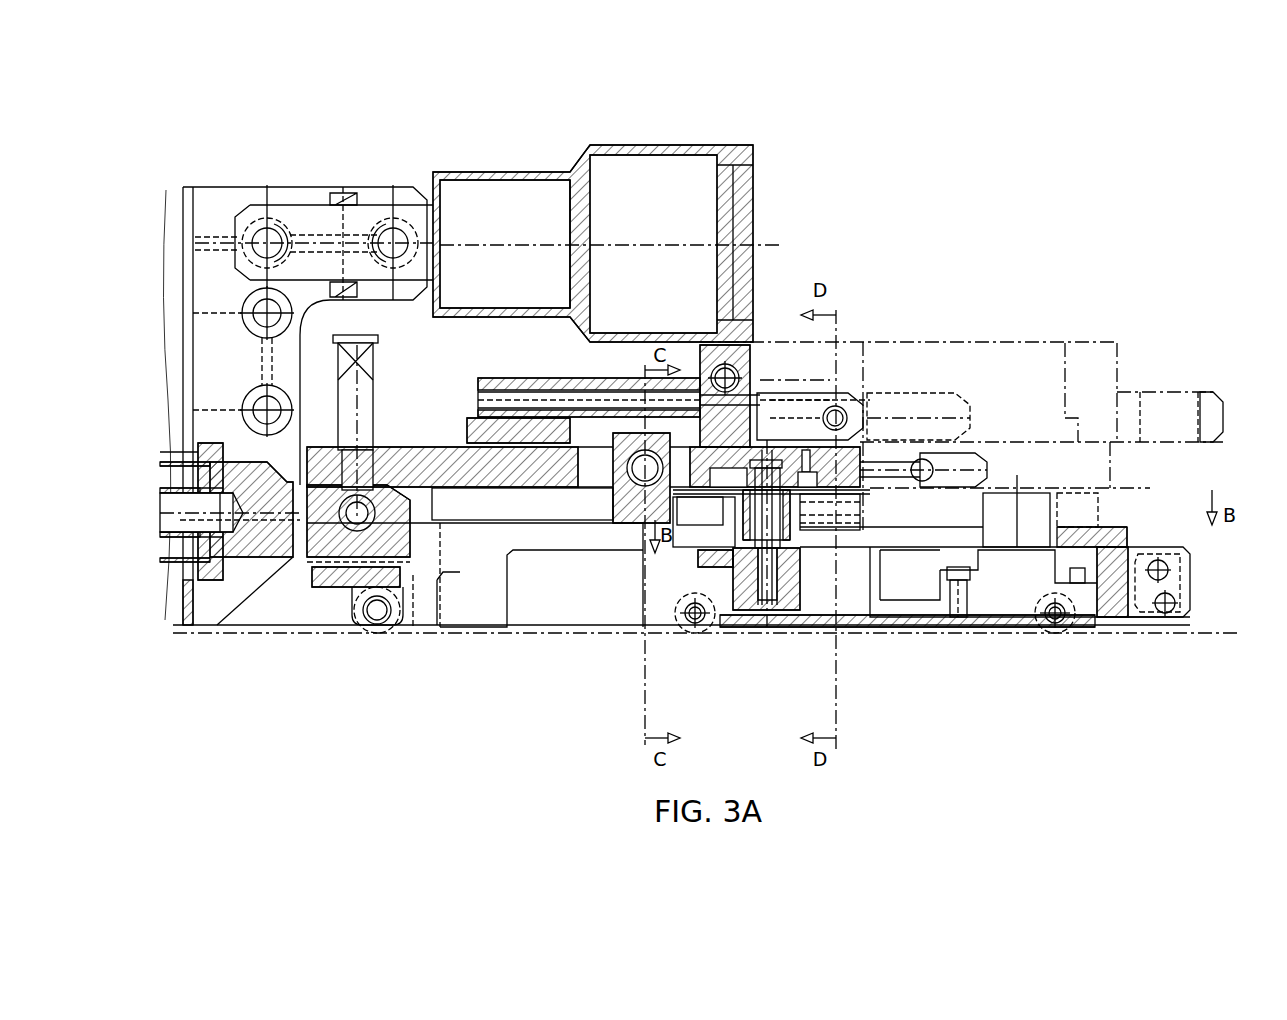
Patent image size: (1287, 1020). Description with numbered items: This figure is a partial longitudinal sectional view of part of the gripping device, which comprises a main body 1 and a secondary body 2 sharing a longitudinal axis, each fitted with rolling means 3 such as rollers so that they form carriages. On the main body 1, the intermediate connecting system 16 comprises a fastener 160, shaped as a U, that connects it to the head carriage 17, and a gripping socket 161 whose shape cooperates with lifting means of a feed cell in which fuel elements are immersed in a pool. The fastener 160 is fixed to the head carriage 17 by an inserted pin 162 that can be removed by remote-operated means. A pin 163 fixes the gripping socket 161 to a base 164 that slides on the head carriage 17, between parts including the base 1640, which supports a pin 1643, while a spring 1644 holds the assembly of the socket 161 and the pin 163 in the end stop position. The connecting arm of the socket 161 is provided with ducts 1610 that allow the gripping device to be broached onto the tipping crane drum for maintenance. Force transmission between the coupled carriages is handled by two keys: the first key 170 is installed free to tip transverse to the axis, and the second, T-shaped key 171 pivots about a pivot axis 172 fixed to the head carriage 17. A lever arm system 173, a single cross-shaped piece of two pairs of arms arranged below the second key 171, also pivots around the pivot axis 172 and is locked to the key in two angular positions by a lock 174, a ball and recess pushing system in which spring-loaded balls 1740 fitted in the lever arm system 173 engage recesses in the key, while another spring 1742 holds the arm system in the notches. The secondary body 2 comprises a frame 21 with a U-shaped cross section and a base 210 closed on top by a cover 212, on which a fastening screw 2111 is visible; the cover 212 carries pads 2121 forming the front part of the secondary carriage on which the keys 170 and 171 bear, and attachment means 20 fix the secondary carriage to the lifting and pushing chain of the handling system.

The main body 1 is at (280, 648).
The secondary body 2 is at (940, 627).
The rolling means 3 is at (383, 632).
The intermediate connecting system 16 is at (227, 605).
The head carriage 17 is at (455, 590).
The attachment means 20 is at (1180, 612).
The frame 21 is at (905, 610).
The fastener 160 is at (333, 590).
The gripping socket 161 is at (490, 195).
The inserted pin 162 is at (345, 433).
The pin 163 is at (760, 345).
The base 164 is at (485, 430).
The first key 170 is at (620, 520).
The second key 171 is at (837, 487).
The pivot axis 172 is at (762, 627).
The lever arm system 173 is at (782, 622).
The lock system 174 is at (800, 605).
The base 210 is at (1112, 627).
The cover 212 is at (1128, 532).
The ducts 1610 is at (240, 405).
The base 1640 is at (578, 432).
The pin 1643 is at (605, 385).
The spring 1644 is at (520, 380).
The balls 1740 is at (718, 627).
The spring 1742 is at (840, 527).
The screw 2111 is at (962, 627).
The pads 2121 is at (660, 557).